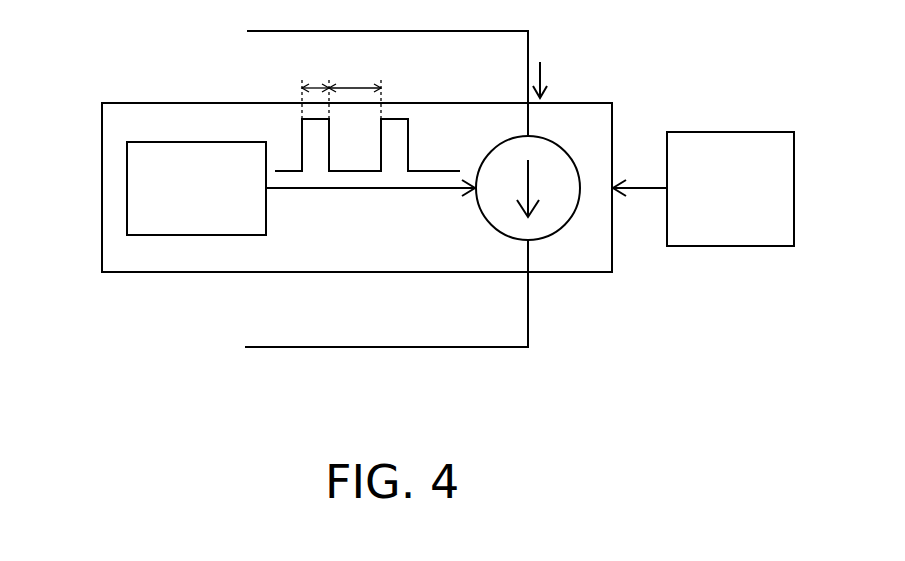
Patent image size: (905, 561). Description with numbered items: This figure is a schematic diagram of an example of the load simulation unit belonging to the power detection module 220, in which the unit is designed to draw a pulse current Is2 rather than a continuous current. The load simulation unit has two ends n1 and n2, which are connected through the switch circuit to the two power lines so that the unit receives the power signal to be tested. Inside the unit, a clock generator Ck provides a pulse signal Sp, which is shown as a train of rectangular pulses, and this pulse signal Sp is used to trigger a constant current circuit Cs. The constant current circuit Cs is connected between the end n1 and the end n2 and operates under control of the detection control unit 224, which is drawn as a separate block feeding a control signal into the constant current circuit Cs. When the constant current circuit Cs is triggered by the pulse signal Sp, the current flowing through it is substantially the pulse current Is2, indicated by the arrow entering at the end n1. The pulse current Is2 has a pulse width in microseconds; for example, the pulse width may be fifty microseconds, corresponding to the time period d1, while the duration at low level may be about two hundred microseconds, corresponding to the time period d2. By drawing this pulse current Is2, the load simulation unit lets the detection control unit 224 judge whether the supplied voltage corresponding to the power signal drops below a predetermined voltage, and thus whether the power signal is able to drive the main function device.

The power detection module 220 is at (122, 103).
The detection control unit 224 is at (730, 246).
The clock generator Ck is at (127, 188).
The pulse signal Sp is at (358, 142).
The time period d1 is at (316, 87).
The time period d2 is at (355, 87).
The constant current circuit Cs is at (565, 228).
The first end of the load simulation unit n1 is at (369, 76).
The second end of the load simulation unit n2 is at (369, 299).
The pulse current Is2 is at (558, 80).